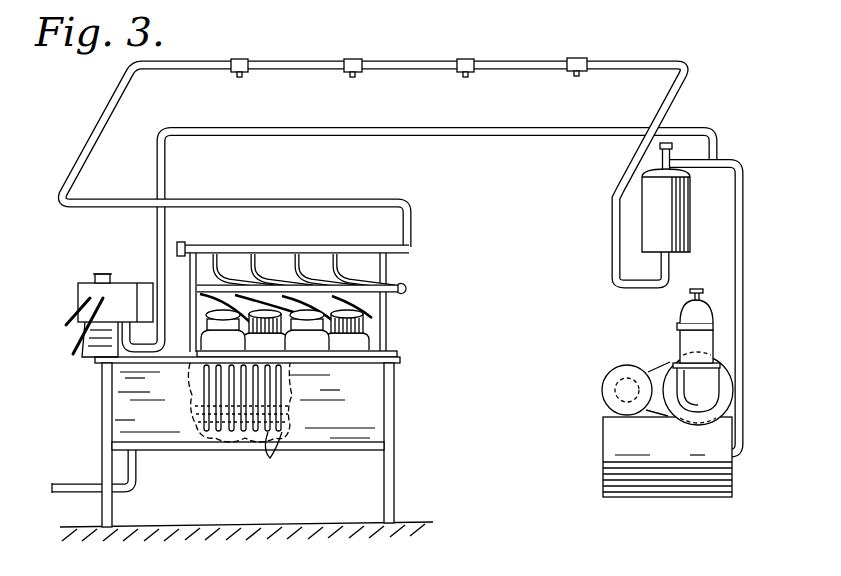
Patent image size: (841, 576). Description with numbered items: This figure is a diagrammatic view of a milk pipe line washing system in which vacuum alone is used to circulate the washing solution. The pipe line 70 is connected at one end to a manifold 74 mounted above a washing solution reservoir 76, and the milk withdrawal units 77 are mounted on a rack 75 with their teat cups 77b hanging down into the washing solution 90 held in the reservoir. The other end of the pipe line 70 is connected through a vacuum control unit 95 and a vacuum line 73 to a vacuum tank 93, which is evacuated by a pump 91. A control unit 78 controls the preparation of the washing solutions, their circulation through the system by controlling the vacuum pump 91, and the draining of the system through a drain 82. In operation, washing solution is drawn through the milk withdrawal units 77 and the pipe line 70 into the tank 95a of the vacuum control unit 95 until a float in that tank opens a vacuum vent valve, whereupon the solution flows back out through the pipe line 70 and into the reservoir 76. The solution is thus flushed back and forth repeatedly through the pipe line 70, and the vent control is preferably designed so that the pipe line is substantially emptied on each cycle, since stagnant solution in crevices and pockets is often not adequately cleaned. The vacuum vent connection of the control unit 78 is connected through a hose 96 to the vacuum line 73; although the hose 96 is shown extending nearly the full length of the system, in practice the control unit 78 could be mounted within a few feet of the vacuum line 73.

The pipe line 70 is at (160, 72).
The vacuum line 73 is at (742, 333).
The manifold 74 is at (271, 246).
The rack 75 is at (385, 275).
The washing solution reservoir 76 is at (368, 415).
The milk withdrawal units 77 is at (368, 365).
The teat cups 77b is at (272, 458).
The control unit 78 is at (85, 283).
The drain 82 is at (69, 484).
The washing solution 90 is at (190, 418).
The vacuum pump 91 is at (698, 413).
The vacuum tank 93 is at (732, 468).
The vacuum control unit 95 is at (716, 197).
The tank 95a is at (672, 236).
The hose 96 is at (158, 249).